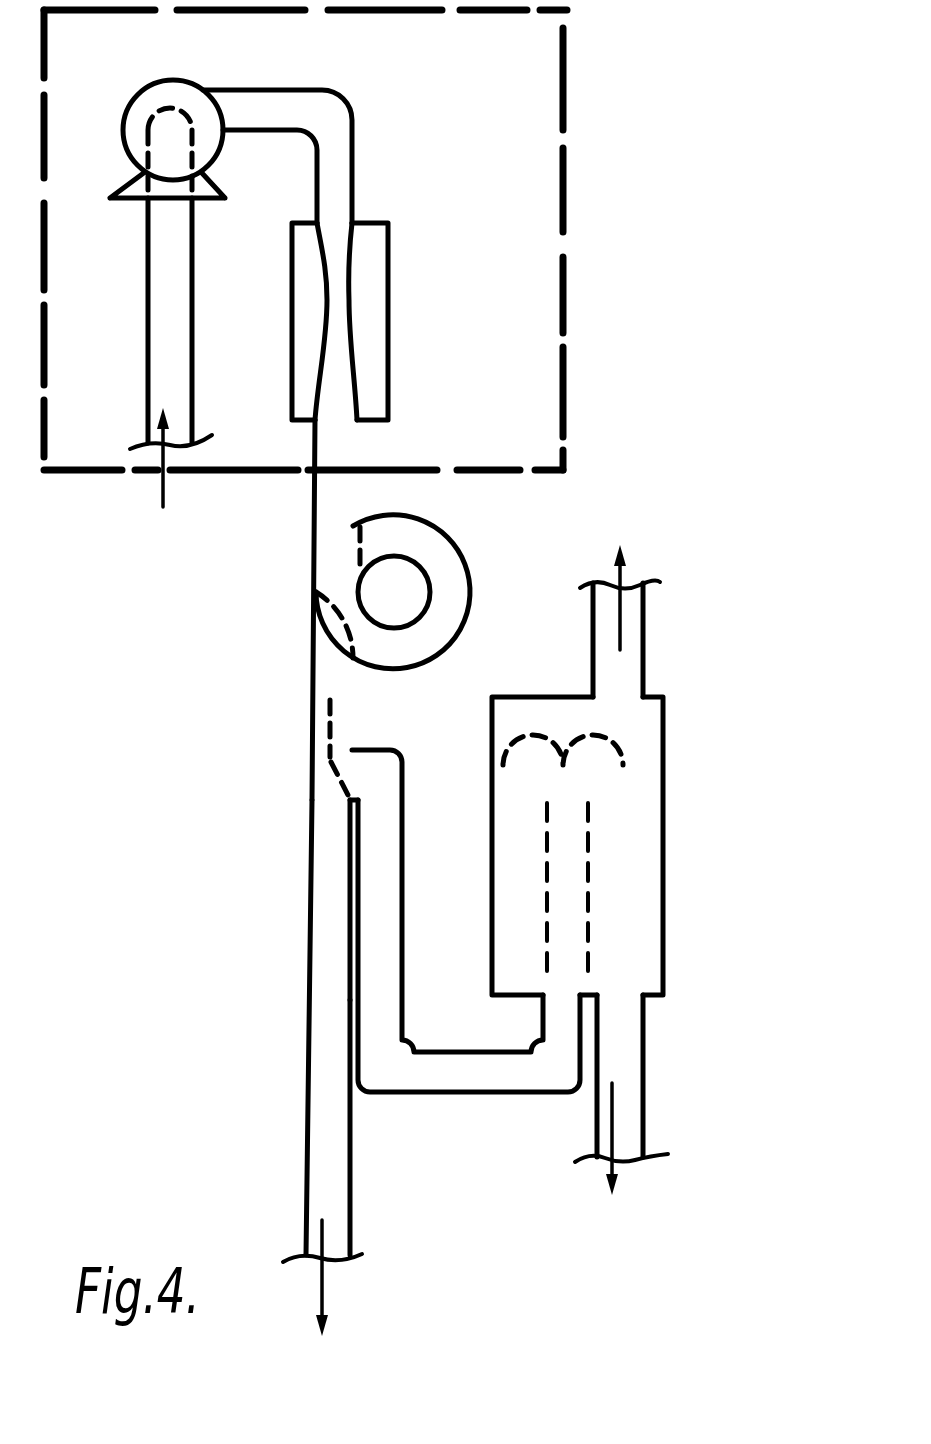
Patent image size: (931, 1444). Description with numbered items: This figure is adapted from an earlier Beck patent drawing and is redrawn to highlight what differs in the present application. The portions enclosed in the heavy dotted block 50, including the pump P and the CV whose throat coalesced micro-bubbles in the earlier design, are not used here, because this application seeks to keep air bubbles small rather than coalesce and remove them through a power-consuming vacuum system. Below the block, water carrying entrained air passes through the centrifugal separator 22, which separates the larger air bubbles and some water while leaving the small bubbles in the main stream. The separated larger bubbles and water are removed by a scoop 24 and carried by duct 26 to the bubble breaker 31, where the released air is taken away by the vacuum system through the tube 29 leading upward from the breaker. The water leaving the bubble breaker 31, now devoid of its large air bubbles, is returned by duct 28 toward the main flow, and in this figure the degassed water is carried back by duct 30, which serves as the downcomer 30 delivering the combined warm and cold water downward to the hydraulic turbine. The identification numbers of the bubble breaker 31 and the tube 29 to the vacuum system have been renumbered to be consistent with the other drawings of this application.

The heavy dotted block 50 is at (578, 213).
The pump P is at (130, 88).
The CV throat CV is at (400, 333).
The centrifugal separator 22 is at (490, 553).
The scoop 24 is at (327, 735).
The duct 26 is at (478, 1107).
The duct 28 is at (655, 1098).
The gas outlet pipe 29 is at (655, 630).
The downcomer 30 is at (353, 1215).
The bubble breaker 31 is at (673, 833).